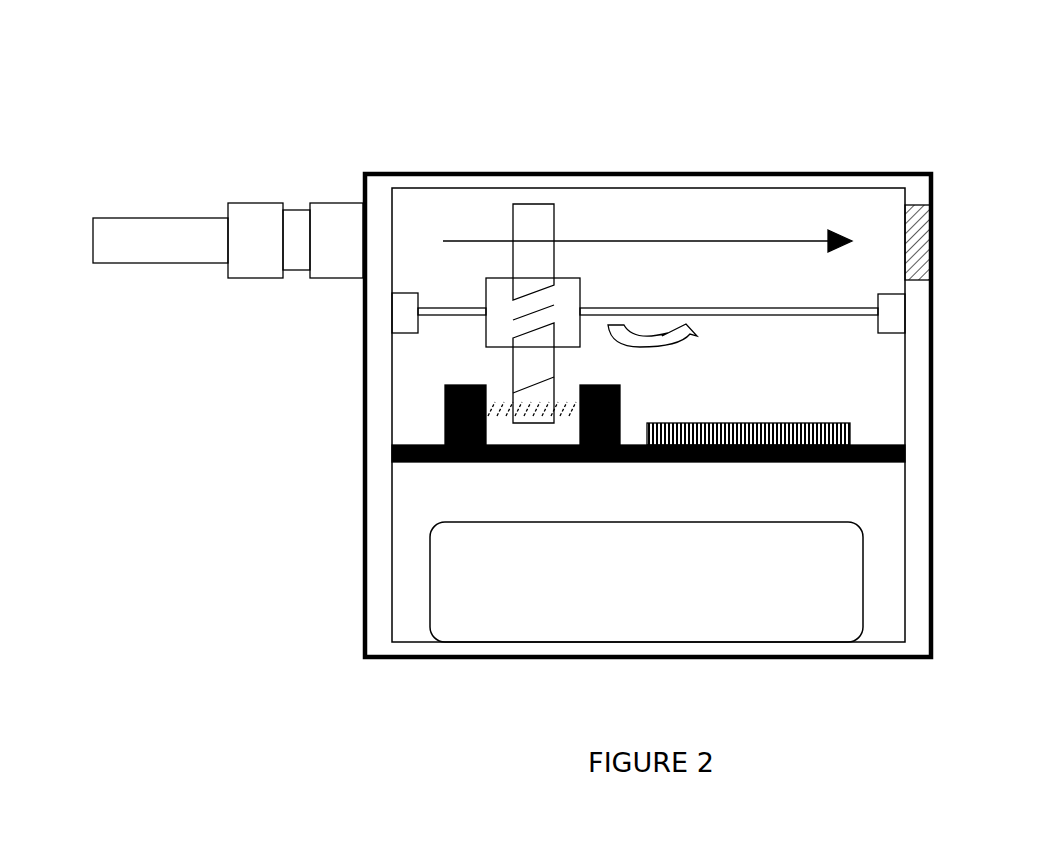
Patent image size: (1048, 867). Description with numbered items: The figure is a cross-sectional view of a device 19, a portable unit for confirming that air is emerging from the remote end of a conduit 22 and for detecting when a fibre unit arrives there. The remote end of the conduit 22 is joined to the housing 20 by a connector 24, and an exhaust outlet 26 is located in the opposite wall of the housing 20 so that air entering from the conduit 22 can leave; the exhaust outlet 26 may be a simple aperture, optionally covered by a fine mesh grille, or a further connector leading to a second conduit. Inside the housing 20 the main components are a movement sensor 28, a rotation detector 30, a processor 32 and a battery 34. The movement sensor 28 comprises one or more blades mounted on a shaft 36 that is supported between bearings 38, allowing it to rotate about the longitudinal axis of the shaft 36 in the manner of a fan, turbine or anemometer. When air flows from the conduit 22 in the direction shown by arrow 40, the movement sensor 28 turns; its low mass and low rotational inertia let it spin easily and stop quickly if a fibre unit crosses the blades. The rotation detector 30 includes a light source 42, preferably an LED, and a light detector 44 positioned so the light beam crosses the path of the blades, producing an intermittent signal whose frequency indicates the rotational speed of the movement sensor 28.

The device 19 is at (891, 121).
The housing 20 is at (490, 172).
The conduit 22 is at (162, 263).
The connector 24 is at (262, 278).
The exhaust outlet 26 is at (934, 242).
The movement sensor 28 is at (555, 218).
The rotation detector 30 is at (414, 395).
The processor 32 is at (835, 422).
The battery 34 is at (860, 580).
The shaft 36 is at (796, 317).
The bearings 38 is at (392, 305).
The arrow 40 is at (708, 240).
The light source 42 is at (442, 423).
The light detector 44 is at (600, 462).